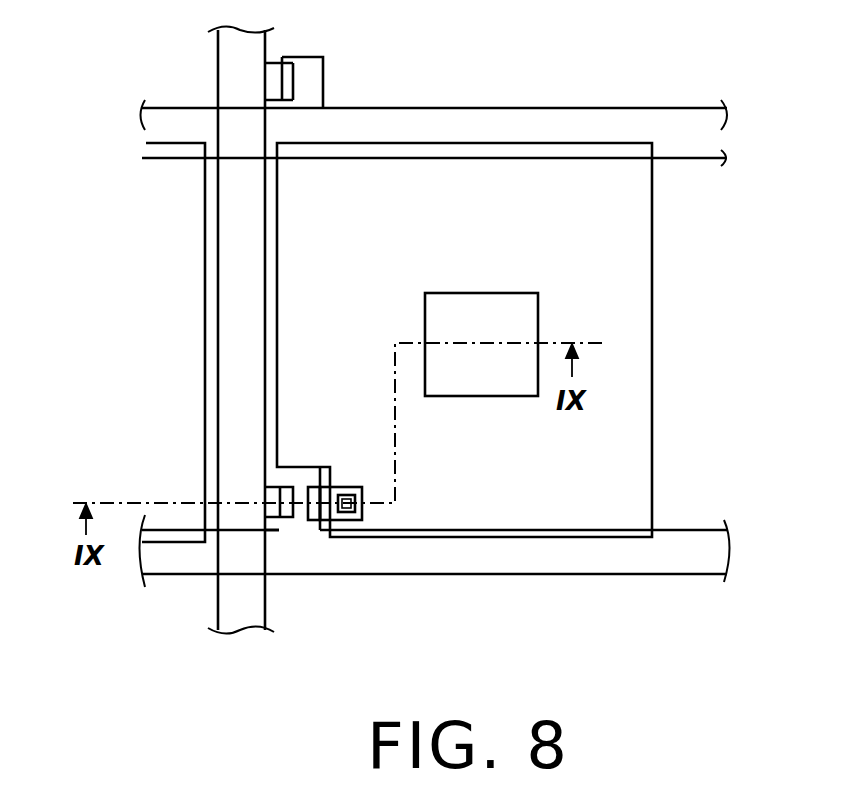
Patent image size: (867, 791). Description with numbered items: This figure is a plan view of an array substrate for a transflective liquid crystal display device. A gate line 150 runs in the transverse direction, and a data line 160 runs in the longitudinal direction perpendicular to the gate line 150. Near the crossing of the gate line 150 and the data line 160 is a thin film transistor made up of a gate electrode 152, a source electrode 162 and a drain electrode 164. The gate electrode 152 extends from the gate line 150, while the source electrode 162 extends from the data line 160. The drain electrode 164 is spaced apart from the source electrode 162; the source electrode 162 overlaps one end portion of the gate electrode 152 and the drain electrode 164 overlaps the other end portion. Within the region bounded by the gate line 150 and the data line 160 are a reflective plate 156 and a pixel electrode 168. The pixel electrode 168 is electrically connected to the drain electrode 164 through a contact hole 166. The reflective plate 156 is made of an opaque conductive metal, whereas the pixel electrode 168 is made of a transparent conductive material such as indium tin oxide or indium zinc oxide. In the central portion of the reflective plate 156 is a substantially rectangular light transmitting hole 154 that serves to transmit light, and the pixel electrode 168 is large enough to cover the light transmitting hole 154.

The gate line 150 is at (535, 576).
The gate electrode 152 is at (298, 530).
The light transmitting hole 154 is at (488, 307).
The reflective plate 156 is at (686, 253).
The data line 160 is at (233, 291).
The source electrode 162 is at (272, 497).
The drain electrode 164 is at (318, 490).
The contact hole 166 is at (347, 512).
The pixel electrode 168 is at (654, 422).